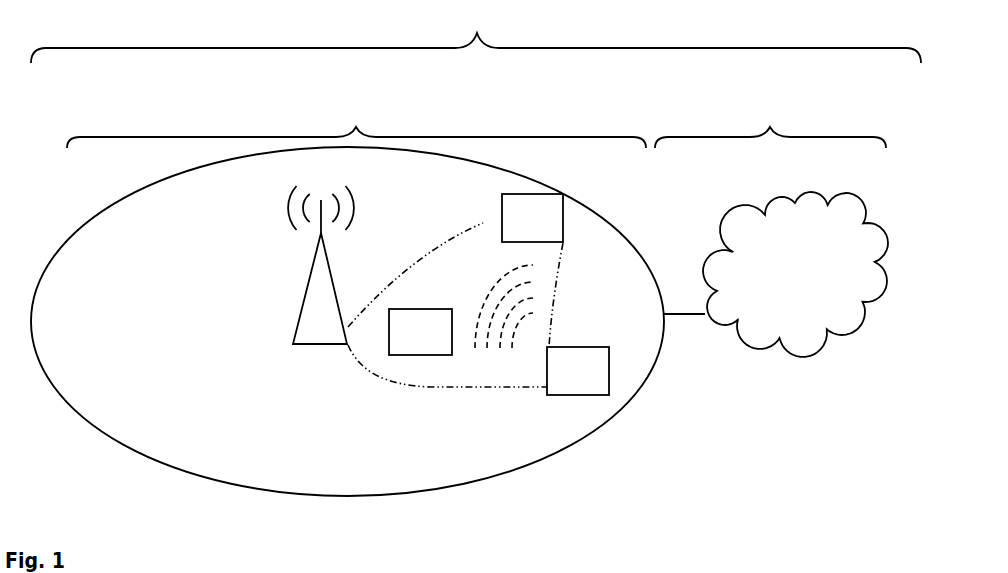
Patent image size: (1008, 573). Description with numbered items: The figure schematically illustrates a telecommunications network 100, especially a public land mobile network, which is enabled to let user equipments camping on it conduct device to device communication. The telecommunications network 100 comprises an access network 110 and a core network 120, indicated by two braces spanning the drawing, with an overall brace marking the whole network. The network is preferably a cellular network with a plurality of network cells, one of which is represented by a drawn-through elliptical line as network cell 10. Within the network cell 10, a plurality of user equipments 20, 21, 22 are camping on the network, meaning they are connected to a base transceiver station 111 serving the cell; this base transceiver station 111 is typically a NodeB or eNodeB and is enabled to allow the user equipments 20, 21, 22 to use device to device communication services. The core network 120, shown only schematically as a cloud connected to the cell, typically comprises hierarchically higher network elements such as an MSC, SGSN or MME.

The telecommunications network 100 is at (476, 33).
The access network 110 is at (356, 123).
The core network 120 is at (771, 228).
The network cell 10 is at (134, 452).
The base transceiver station 111 is at (321, 265).
The user equipment 21 is at (532, 218).
The user equipment 22 is at (461, 310).
The user equipment 20 is at (578, 371).